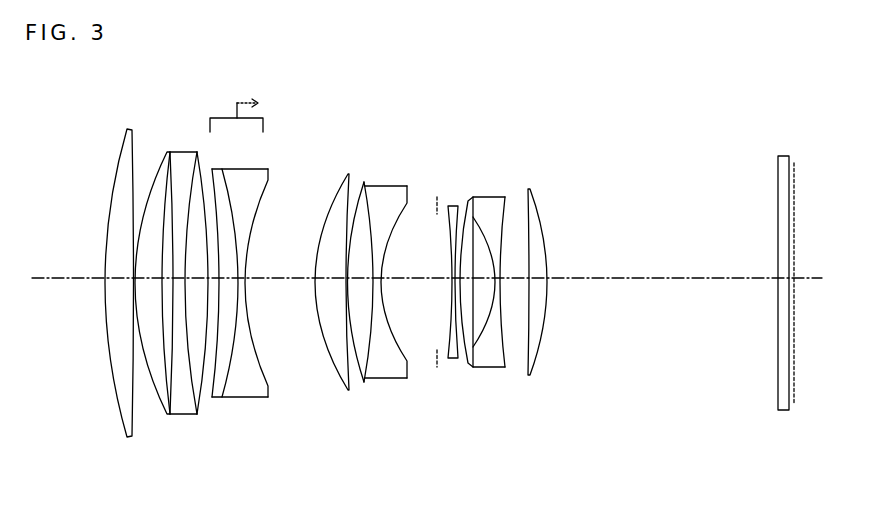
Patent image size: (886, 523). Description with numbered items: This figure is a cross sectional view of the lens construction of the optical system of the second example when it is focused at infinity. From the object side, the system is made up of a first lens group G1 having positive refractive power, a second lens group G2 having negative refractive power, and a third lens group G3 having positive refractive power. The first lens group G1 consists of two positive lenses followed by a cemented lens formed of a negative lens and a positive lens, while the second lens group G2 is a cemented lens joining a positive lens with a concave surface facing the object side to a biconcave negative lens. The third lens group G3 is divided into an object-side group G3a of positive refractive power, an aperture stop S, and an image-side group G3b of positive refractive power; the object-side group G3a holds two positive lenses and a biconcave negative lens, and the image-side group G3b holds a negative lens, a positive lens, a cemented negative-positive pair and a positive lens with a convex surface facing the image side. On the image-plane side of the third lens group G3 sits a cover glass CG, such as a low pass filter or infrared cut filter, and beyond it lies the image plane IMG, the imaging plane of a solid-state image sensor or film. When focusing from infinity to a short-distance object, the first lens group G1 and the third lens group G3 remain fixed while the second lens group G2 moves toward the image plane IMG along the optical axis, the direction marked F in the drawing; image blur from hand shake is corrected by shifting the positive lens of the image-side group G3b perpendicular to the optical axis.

The first lens group G1 is at (101, 430).
The second lens group G2 is at (210, 430).
The third lens group G3 is at (440, 301).
The object-side group G3a is at (322, 395).
The image-side group G3b is at (498, 313).
The aperture stop S is at (438, 182).
The focusing lens group movement direction F is at (236, 106).
The cover glass CG is at (782, 424).
The image plane IMG is at (797, 147).